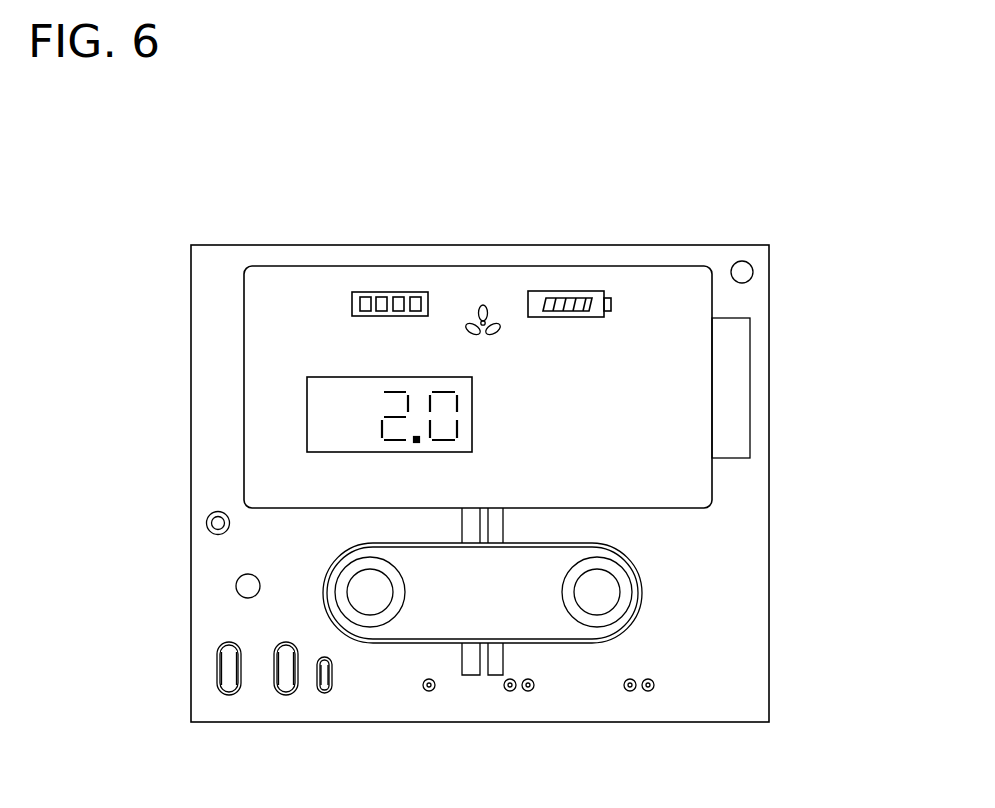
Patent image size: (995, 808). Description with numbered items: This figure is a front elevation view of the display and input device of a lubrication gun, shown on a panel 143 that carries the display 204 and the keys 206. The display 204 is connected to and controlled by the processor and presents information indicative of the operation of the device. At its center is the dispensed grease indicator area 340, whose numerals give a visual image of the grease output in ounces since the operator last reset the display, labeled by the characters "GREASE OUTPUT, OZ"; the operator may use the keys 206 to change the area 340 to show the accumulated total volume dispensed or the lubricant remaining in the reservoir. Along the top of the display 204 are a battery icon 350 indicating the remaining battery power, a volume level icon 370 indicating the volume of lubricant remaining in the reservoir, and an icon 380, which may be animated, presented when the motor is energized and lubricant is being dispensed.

The control panel housing 143 is at (737, 597).
The display 204 is at (641, 265).
The keys 206 is at (556, 612).
The dispensed grease indicator area 340 is at (307, 415).
The battery icon 350 is at (551, 291).
The volume level icon 370 is at (372, 291).
The icon 380 is at (484, 305).